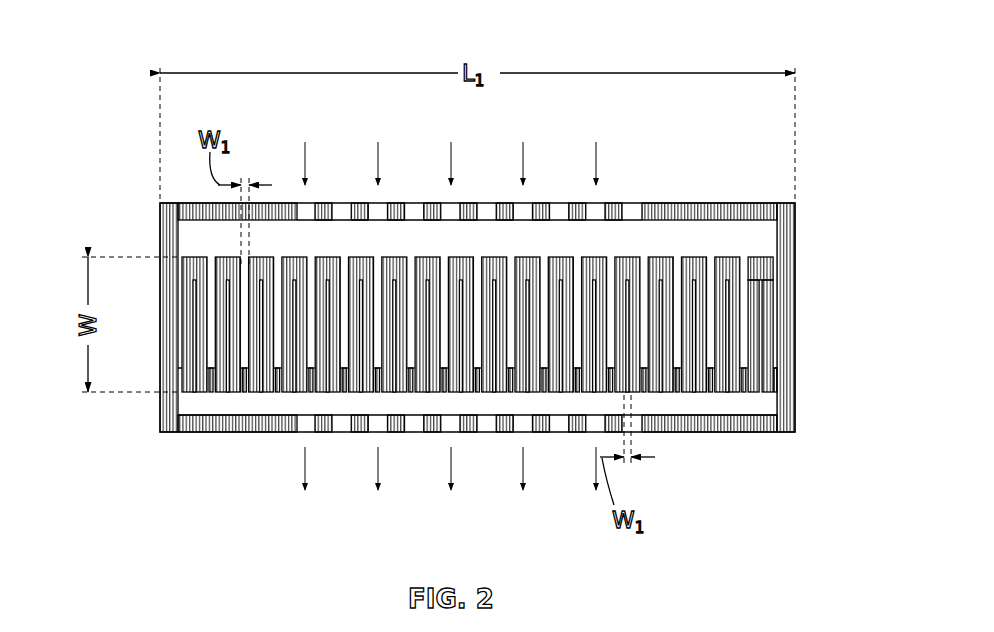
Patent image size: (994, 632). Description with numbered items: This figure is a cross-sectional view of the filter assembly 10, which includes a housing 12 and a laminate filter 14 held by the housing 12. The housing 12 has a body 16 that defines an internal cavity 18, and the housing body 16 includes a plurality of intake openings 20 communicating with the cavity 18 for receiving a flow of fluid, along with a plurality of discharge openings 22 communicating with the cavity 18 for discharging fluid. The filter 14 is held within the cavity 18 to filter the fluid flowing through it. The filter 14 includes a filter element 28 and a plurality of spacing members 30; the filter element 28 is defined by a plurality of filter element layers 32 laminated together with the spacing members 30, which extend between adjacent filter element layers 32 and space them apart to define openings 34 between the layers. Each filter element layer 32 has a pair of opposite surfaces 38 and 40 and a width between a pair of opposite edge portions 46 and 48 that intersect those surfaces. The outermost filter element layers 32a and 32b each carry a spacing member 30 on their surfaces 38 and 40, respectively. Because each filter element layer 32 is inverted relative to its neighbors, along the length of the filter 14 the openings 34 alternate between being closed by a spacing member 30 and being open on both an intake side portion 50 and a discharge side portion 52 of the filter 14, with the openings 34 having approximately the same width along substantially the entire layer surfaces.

The filter assembly 10 is at (108, 62).
The housing 12 is at (796, 278).
The laminate filter 14 is at (671, 401).
The body 16 is at (158, 406).
The internal cavity 18 is at (203, 402).
The intake openings 20 is at (340, 208).
The discharge openings 22 is at (490, 432).
The filter element 28 is at (628, 244).
The spacing members 30 is at (660, 258).
The filter element layers 32 is at (532, 332).
The outermost filter element layer 32a is at (780, 315).
The outermost filter element layer 32b is at (176, 315).
The openings 34 is at (448, 352).
The surface 38 is at (248, 360).
The surface 40 is at (231, 385).
The edge portion 46 is at (755, 250).
The edge portion 48 is at (769, 250).
The intake side portion 50 is at (567, 244).
The discharge side portion 52 is at (380, 402).